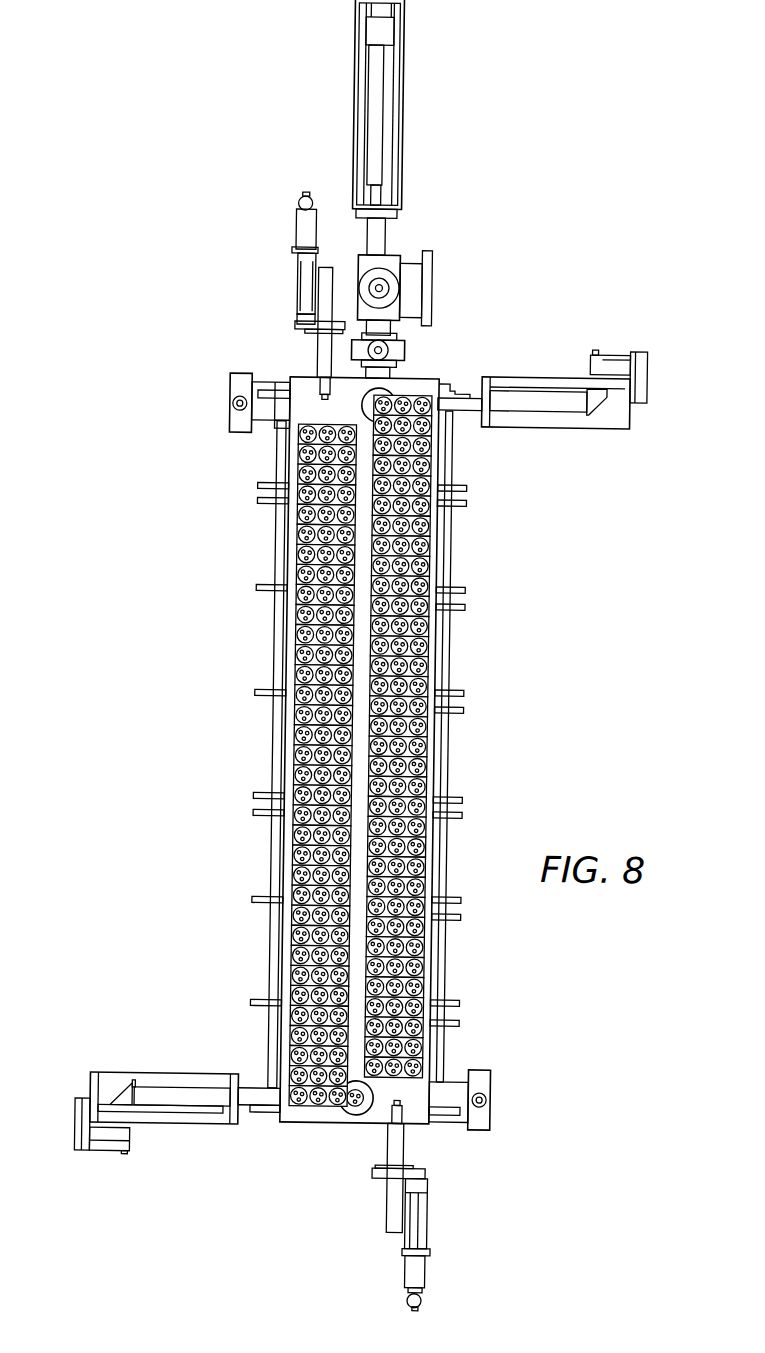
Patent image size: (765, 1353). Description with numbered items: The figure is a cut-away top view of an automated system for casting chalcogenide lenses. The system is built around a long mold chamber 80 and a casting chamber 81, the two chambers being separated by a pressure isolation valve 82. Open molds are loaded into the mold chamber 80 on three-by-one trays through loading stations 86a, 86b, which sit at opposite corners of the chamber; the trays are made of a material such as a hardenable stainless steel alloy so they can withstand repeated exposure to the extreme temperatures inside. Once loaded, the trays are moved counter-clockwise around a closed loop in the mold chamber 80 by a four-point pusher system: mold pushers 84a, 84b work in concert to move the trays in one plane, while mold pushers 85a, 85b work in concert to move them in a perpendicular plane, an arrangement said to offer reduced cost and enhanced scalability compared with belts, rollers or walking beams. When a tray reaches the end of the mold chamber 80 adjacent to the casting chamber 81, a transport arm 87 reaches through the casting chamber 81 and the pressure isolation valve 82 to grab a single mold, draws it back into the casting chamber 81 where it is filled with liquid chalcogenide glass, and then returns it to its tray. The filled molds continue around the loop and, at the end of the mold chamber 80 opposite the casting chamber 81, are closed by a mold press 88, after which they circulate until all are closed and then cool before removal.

The mold chamber 80 is at (468, 741).
The casting chamber 81 is at (389, 254).
The pressure isolation valve 82 is at (401, 350).
The mold pusher 84a is at (551, 349).
The mold pusher 84b is at (168, 1139).
The mold pusher 85a is at (276, 263).
The mold pusher 85b is at (450, 1237).
The loading station 86a is at (223, 405).
The loading station 86b is at (498, 1098).
The transport arm 87 is at (406, 107).
The mold press 88 is at (382, 1093).